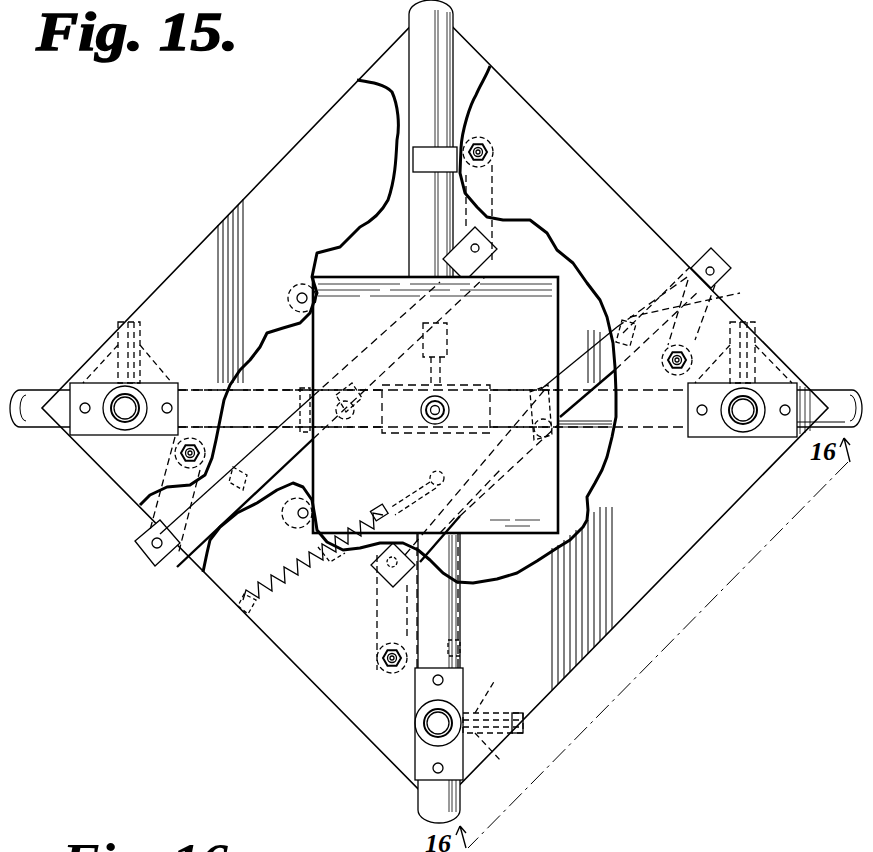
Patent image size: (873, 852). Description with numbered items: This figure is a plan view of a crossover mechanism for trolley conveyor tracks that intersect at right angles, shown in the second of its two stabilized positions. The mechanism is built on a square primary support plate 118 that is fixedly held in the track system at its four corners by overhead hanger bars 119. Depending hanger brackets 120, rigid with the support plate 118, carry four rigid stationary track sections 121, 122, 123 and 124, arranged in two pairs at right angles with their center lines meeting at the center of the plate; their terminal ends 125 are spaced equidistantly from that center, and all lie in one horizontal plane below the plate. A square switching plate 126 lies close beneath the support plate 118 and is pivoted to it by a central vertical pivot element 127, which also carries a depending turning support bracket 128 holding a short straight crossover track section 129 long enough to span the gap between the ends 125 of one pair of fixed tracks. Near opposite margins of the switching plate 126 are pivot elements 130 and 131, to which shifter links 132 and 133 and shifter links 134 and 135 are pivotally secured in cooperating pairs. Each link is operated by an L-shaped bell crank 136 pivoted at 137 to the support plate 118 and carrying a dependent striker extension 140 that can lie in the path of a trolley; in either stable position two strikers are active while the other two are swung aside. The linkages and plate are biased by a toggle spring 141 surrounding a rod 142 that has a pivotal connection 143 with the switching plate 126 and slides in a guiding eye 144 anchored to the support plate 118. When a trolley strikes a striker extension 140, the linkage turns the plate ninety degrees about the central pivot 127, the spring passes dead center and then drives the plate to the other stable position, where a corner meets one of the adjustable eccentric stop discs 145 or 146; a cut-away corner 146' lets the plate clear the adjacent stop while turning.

The primary support plate 118 is at (598, 168).
The overhead hanger bars 119 is at (140, 400).
The hanger brackets 120 is at (118, 330).
The track section 121 is at (36, 427).
The track section 122 is at (830, 392).
The track section 123 is at (448, 48).
The track section 124 is at (462, 803).
The terminal ends 125 is at (348, 385).
The switching plate 126 is at (580, 507).
The central vertical pivot element 127 is at (423, 415).
The turning support bracket 128 is at (450, 362).
The crossover track section 129 is at (507, 388).
The pivot element 130 is at (558, 433).
The pivot element 131 is at (315, 392).
The shifter link 132 is at (455, 553).
The shifter link 133 is at (590, 358).
The shifter link 134 is at (490, 266).
The shifter link 135 is at (178, 553).
The bell crank 136 is at (499, 199).
The pivot 137 is at (482, 145).
The striker extension 140 is at (412, 153).
The toggle spring 141 is at (287, 592).
The rod 142 is at (322, 560).
The pivotal connection 143 is at (441, 470).
The guiding eye 144 is at (243, 613).
The eccentric stop disc 145 is at (294, 300).
The eccentric stop disc 146 is at (279, 520).
The cut-away corner 146' is at (362, 490).